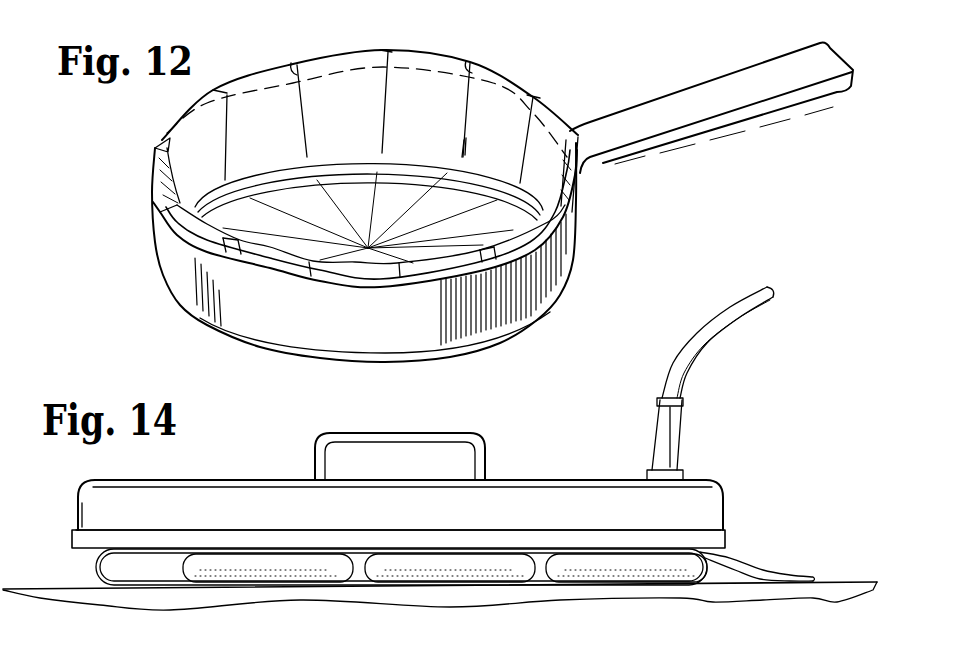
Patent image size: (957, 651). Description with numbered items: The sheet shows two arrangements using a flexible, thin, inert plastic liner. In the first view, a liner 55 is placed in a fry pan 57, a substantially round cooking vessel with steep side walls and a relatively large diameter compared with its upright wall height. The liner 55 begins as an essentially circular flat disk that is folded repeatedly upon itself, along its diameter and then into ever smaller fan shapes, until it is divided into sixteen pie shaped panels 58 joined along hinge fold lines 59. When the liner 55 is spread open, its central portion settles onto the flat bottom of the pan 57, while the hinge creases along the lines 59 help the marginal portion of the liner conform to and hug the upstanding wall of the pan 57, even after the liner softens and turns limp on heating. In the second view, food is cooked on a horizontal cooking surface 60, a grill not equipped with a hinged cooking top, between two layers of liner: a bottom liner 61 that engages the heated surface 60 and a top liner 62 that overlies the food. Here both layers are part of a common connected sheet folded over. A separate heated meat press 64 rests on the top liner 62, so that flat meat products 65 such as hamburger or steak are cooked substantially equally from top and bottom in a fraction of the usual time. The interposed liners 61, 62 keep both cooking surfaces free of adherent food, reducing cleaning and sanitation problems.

In FIG. 12, the liner 55 is at (367, 144).
In FIG. 12, the fry pan 57 is at (567, 267).
In FIG. 12, the pie shaped panels 58 is at (344, 87).
In FIG. 12, the hinge fold lines 59 is at (293, 68).
In FIG. 14, the horizontal cooking surface 60 is at (55, 588).
In FIG. 14, the bottom liner 61 is at (735, 579).
In FIG. 14, the top liner 62 is at (120, 548).
In FIG. 14, the heated meat press 64 is at (558, 493).
In FIG. 14, the flat meat products 65 is at (390, 578).